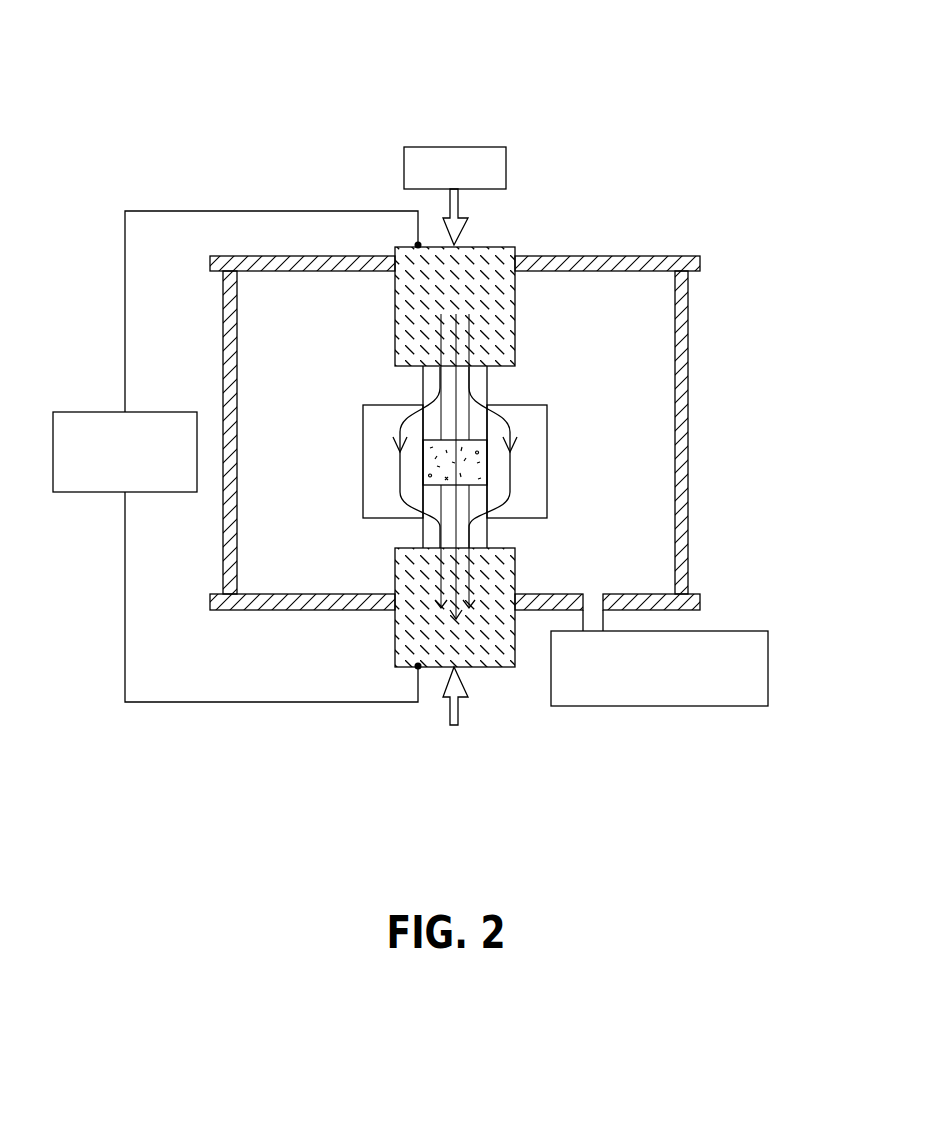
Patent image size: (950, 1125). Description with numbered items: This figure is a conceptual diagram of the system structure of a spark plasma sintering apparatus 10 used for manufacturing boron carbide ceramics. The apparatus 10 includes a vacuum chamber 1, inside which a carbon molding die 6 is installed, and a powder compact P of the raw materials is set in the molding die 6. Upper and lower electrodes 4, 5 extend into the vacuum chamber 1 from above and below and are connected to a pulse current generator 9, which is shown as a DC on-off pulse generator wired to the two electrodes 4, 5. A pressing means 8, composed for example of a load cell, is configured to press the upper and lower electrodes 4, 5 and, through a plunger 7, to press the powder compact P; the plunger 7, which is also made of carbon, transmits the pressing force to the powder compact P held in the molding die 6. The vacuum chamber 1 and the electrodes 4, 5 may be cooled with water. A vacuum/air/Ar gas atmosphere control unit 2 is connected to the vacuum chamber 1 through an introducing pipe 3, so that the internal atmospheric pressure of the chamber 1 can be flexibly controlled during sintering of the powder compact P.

The spark plasma sintering apparatus 10 is at (782, 133).
The vacuum chamber 1 is at (278, 610).
The vacuum/air/Ar gas atmosphere control unit 2 is at (768, 668).
The introducing pipe 3 is at (603, 620).
The upper electrode 4 is at (517, 320).
The lower electrode 5 is at (517, 572).
The molding die 6 is at (527, 405).
The plunger 7 is at (428, 382).
The pressing means 8 is at (506, 165).
The pulse current generator 9 is at (70, 492).
The powder compact P is at (482, 468).